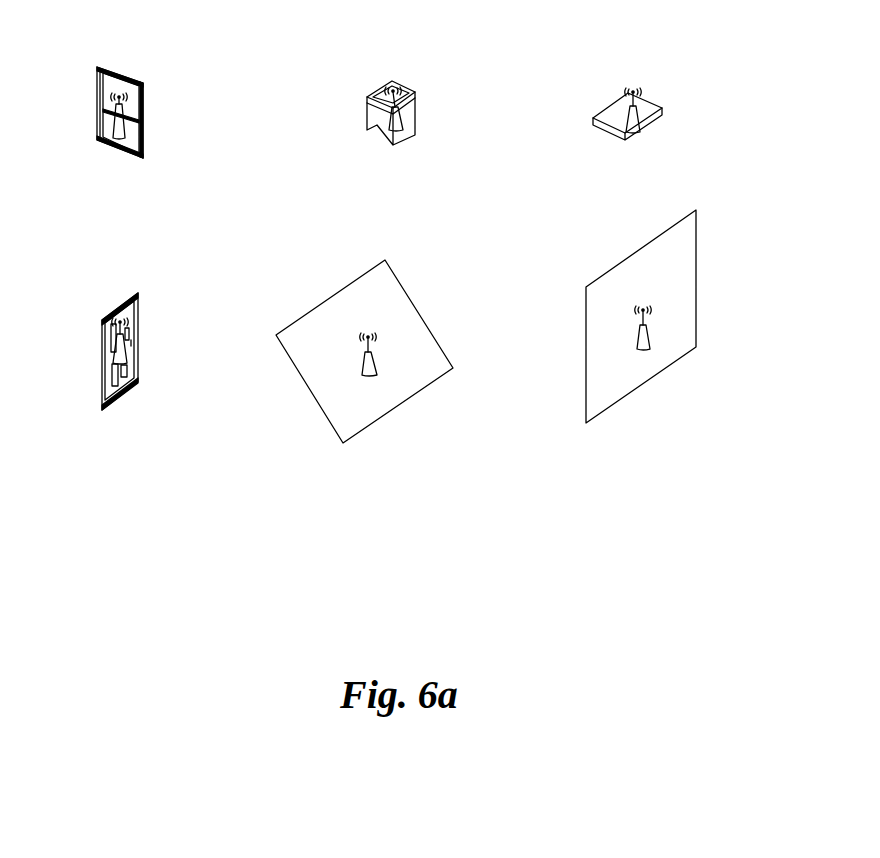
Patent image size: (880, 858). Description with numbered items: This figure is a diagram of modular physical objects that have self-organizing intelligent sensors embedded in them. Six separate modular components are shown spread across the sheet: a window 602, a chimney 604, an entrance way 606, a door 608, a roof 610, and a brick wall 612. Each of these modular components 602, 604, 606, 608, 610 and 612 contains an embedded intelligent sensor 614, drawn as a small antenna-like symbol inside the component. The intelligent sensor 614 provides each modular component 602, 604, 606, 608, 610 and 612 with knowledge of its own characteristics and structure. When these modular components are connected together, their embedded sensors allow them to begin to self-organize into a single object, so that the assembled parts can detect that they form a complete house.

The window 602 is at (141, 84).
The chimney 604 is at (412, 82).
The entrance way 606 is at (650, 97).
The door 608 is at (138, 294).
The roof 610 is at (408, 292).
The brick wall 612 is at (693, 208).
The intelligent sensor 614 is at (112, 137).